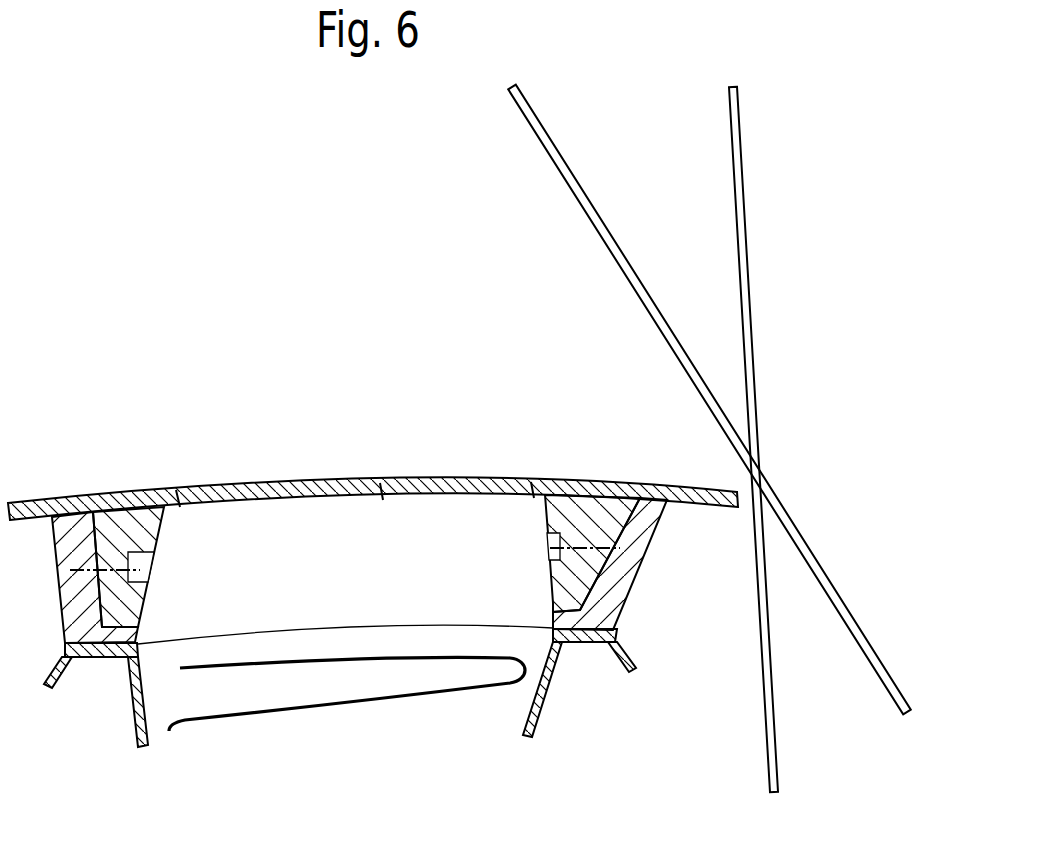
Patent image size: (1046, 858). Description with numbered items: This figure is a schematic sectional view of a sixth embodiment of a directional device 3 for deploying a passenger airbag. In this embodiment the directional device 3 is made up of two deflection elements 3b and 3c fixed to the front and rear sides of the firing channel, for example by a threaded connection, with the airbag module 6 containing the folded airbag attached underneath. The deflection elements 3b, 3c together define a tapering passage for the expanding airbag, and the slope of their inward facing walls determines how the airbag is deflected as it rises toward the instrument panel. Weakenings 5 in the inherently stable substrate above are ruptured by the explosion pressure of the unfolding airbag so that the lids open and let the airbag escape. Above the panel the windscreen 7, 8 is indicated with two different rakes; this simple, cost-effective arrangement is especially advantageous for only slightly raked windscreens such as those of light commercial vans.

The directional device 3 is at (238, 571).
The deflection element 3b is at (588, 518).
The deflection element 3c is at (112, 532).
The weakening 5 is at (183, 491).
The airbag module 6 is at (140, 726).
The windscreen 7 is at (562, 163).
The windscreen 8 is at (741, 157).